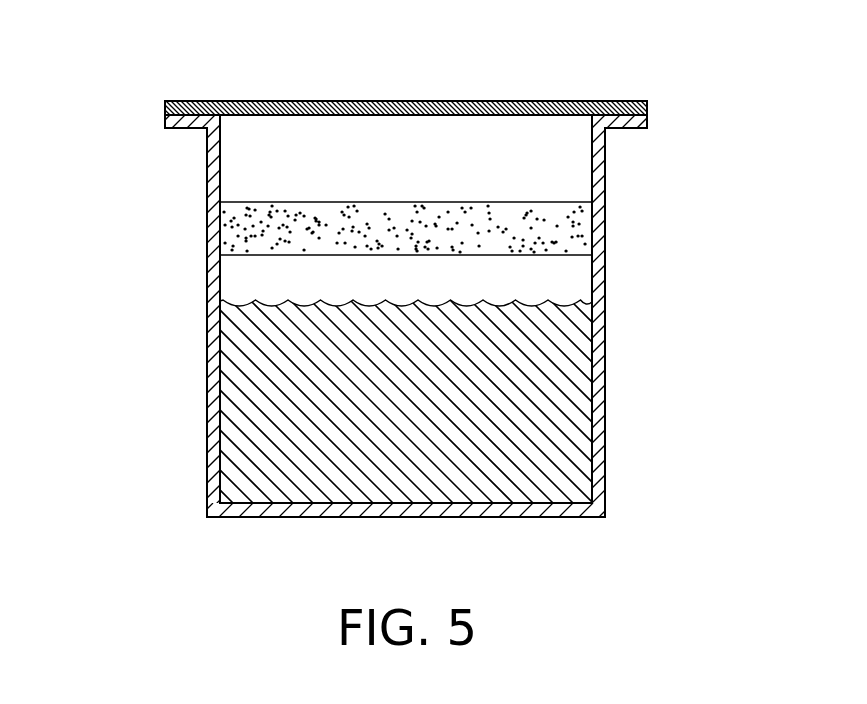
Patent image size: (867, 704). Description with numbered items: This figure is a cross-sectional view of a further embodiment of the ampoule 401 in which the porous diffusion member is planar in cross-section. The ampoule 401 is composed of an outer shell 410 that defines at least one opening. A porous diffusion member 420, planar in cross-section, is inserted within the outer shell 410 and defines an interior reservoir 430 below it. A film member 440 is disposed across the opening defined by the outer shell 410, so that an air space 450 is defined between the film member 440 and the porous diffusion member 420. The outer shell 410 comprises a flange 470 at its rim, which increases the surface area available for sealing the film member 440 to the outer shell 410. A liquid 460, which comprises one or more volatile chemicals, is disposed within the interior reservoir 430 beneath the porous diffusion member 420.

The ampoule 401 is at (662, 410).
The outer shell 410 is at (605, 375).
The porous diffusion member 420 is at (532, 227).
The interior reservoir 430 is at (305, 273).
The film member 440 is at (473, 102).
The air space 450 is at (448, 172).
The liquid 460 is at (273, 413).
The flange 470 is at (183, 128).